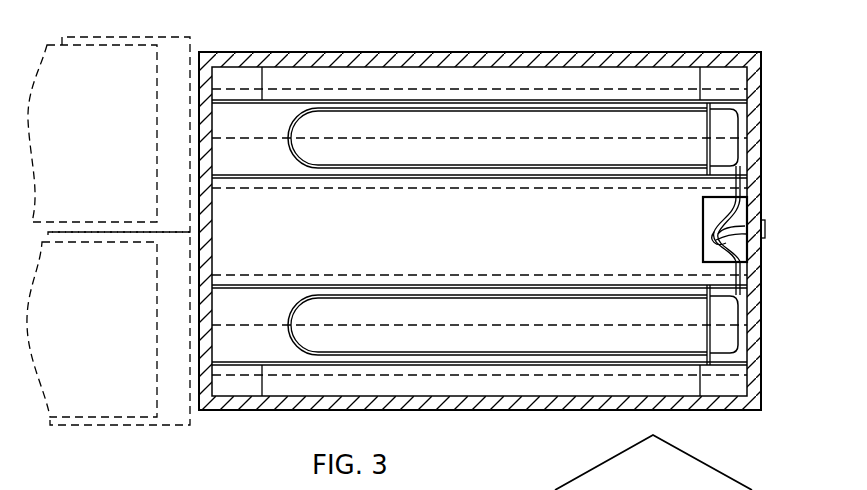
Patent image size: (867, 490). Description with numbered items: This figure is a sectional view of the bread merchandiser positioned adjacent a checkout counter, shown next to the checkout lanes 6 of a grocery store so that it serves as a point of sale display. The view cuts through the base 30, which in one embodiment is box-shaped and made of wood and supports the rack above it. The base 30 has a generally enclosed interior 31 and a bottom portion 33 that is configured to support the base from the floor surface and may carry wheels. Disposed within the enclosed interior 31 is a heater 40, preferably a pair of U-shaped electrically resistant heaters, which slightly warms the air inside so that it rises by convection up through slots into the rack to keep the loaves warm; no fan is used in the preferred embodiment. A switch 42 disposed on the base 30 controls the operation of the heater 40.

The checkout lanes 6 is at (125, 56).
The base 30 is at (637, 50).
The enclosed interior 31 is at (227, 205).
The bottom portion 33 is at (727, 80).
The heater 40 is at (380, 168).
The switch 42 is at (767, 230).